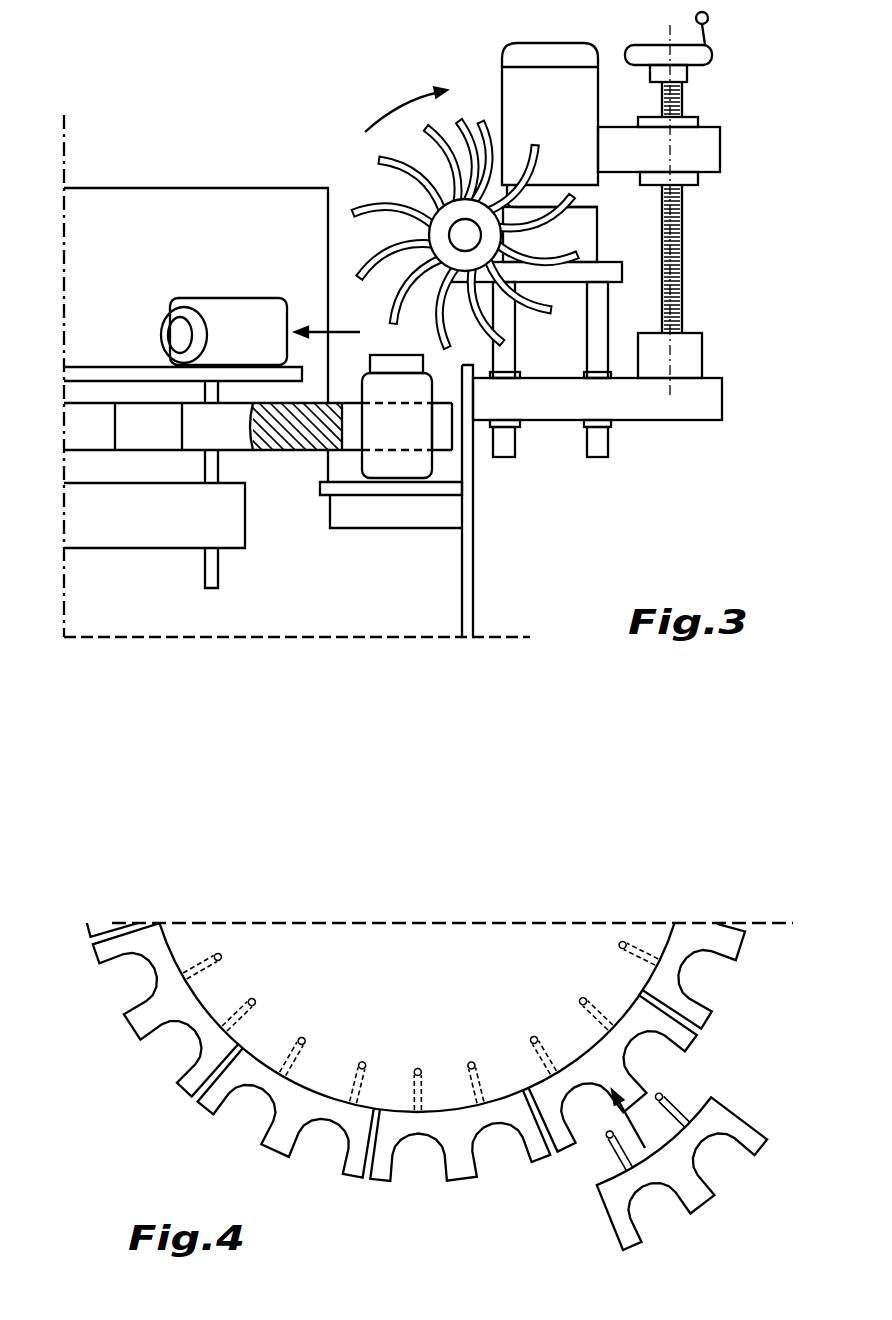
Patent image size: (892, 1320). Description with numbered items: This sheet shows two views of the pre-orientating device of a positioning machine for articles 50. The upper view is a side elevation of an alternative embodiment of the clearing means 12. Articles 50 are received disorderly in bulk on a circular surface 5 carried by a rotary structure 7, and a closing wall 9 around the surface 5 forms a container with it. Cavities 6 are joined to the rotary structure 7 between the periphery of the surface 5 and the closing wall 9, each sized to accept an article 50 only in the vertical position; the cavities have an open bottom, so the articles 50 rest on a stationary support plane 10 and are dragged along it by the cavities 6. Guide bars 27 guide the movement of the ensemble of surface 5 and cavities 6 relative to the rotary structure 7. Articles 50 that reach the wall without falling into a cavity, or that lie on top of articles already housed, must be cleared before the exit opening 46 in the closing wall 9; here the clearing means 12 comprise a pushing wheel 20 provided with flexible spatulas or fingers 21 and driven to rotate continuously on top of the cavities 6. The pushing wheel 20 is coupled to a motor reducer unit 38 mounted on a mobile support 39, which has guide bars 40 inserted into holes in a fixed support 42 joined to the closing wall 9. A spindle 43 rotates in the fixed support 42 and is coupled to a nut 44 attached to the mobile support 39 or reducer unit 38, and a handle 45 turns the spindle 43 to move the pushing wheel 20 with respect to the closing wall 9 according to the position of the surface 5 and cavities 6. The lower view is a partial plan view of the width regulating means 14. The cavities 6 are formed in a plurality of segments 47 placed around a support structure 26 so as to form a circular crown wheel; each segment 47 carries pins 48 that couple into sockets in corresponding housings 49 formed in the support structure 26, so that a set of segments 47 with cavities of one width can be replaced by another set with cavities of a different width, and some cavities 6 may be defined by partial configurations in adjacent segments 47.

In FIG. 3, the circular surface 5 is at (123, 375).
In FIG. 3, the cavities 6 is at (345, 428).
In FIG. 4, the cavities 6 is at (403, 1178).
In FIG. 3, the rotary structure 7 is at (108, 535).
In FIG. 3, the closing wall 9 is at (215, 195).
In FIG. 3, the stationary support plane 10 is at (402, 492).
In FIG. 3, the clearing means 12 is at (381, 98).
In FIG. 4, the width regulating means 14 is at (576, 1174).
In FIG. 3, the pushing wheel 20 is at (465, 112).
In FIG. 3, the flexible spatulas and/or fingers 21 is at (372, 205).
In FIG. 4, the support structure 26 is at (432, 1003).
In FIG. 3, the guide bars 27 is at (218, 560).
In FIG. 3, the motor reducer unit 38 is at (548, 45).
In FIG. 3, the mobile support 39 is at (607, 262).
In FIG. 3, the guide bars 40 is at (608, 445).
In FIG. 3, the fixed support 42 is at (688, 413).
In FIG. 3, the spindle 43 is at (685, 275).
In FIG. 3, the nut 44 is at (690, 120).
In FIG. 3, the handle 45 is at (707, 38).
In FIG. 3, the exit opening 46 is at (385, 520).
In FIG. 4, the segments 47 is at (152, 1042).
In FIG. 4, the pins 48 is at (690, 1100).
In FIG. 4, the housings 49 is at (588, 1022).
In FIG. 3, the articles 50 is at (217, 302).